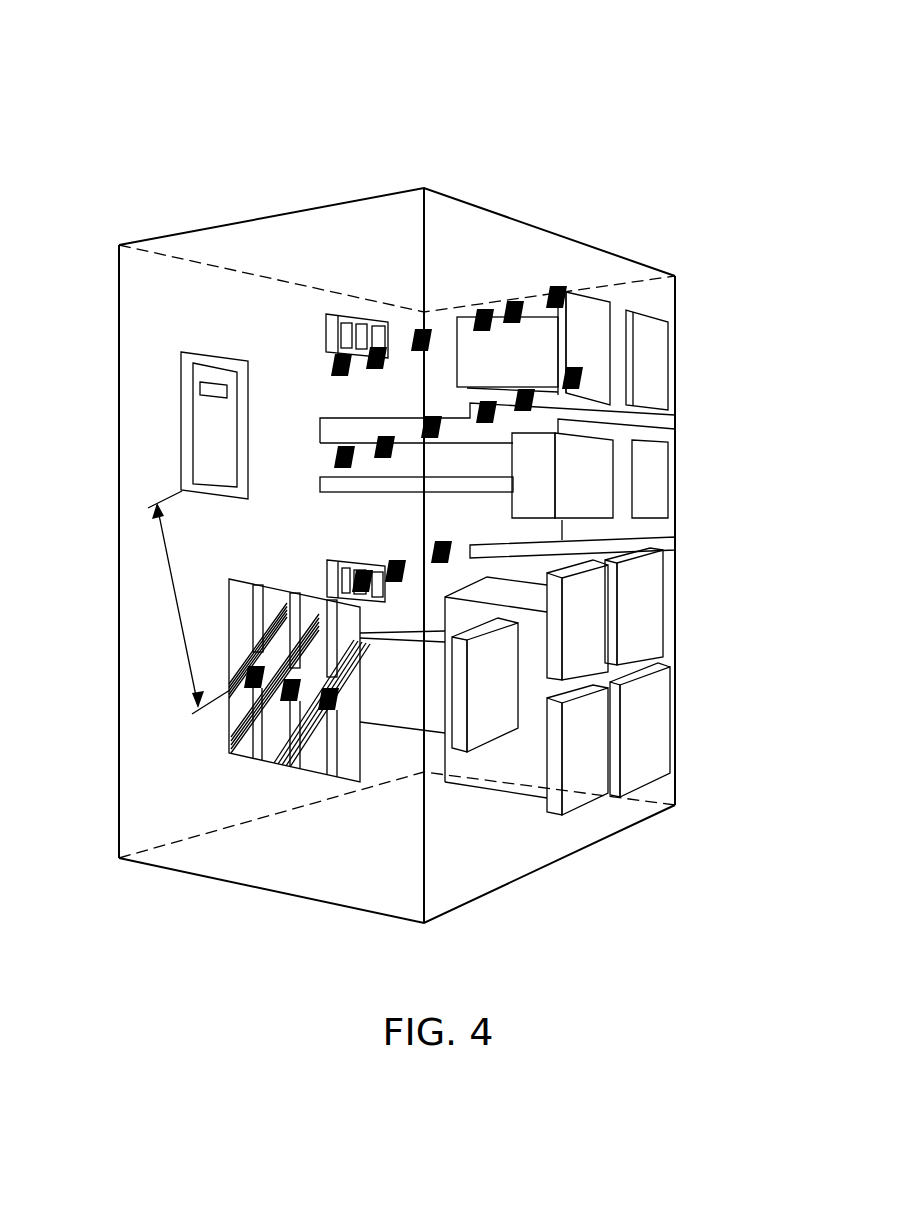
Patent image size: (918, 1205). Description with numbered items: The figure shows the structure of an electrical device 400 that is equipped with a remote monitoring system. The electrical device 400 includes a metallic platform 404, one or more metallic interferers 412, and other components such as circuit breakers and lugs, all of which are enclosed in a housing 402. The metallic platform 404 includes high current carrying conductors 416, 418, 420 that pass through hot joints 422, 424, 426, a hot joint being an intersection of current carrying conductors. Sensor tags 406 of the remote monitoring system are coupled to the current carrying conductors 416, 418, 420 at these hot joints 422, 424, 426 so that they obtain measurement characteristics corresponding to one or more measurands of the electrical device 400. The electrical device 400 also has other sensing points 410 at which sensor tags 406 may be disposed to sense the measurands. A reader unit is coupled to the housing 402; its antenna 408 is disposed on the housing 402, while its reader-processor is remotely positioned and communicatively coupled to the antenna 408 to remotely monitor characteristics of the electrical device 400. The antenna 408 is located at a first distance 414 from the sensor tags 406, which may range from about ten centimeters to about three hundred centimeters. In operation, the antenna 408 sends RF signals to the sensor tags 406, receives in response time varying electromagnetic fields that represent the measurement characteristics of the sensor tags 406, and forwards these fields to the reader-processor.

The electrical device 400 is at (676, 68).
The housing 402 is at (311, 208).
The metallic platform 404 is at (662, 721).
The sensor tags 406 is at (318, 705).
The antenna 408 is at (200, 382).
The sensing points 410 is at (426, 333).
The metallic interferers 412 is at (343, 487).
The first distance 414 is at (167, 558).
The high current carrying conductor 416 is at (230, 672).
The high current carrying conductor 418 is at (238, 753).
The high current carrying conductor 420 is at (281, 760).
The hot joint 422 is at (254, 660).
The hot joint 424 is at (289, 667).
The hot joint 426 is at (338, 678).